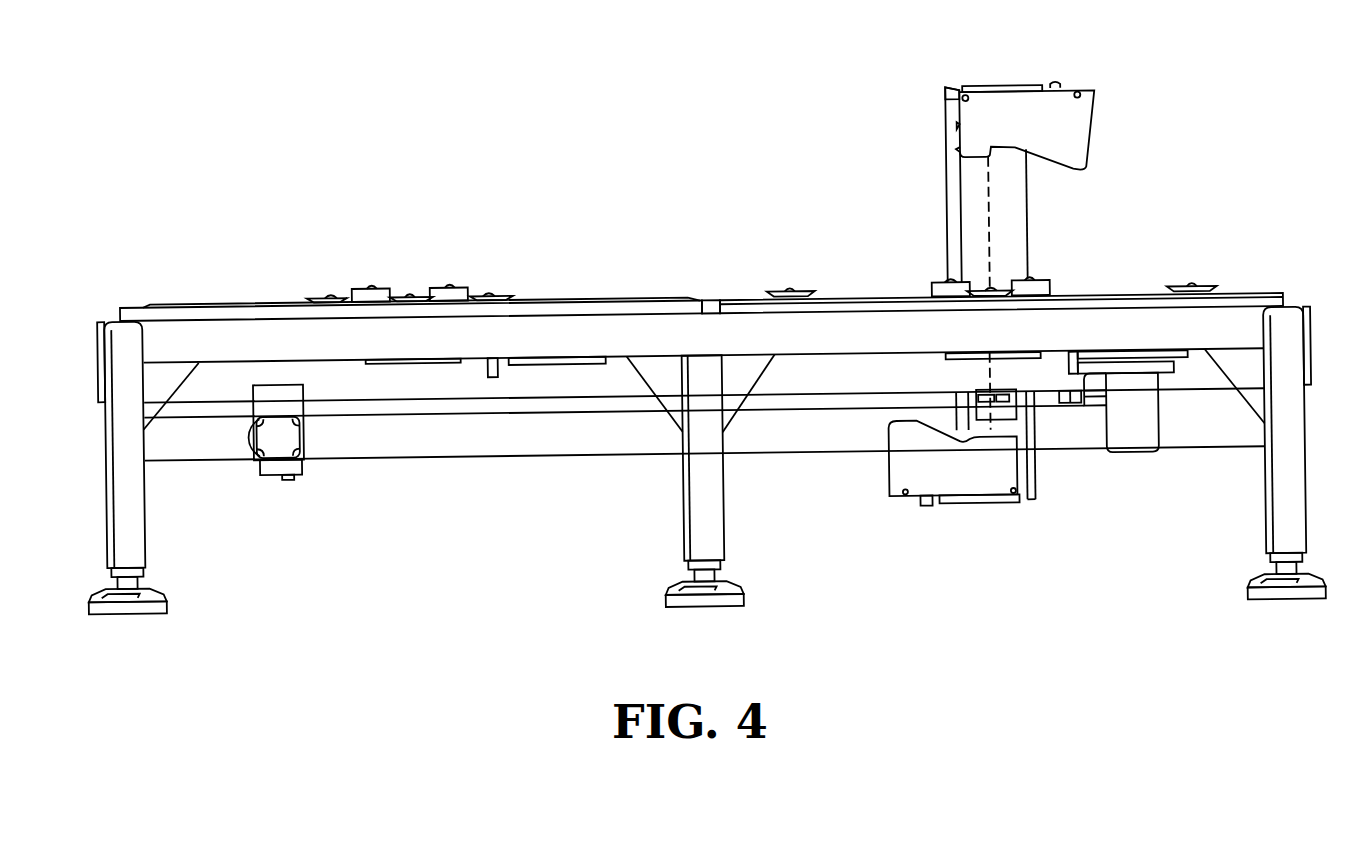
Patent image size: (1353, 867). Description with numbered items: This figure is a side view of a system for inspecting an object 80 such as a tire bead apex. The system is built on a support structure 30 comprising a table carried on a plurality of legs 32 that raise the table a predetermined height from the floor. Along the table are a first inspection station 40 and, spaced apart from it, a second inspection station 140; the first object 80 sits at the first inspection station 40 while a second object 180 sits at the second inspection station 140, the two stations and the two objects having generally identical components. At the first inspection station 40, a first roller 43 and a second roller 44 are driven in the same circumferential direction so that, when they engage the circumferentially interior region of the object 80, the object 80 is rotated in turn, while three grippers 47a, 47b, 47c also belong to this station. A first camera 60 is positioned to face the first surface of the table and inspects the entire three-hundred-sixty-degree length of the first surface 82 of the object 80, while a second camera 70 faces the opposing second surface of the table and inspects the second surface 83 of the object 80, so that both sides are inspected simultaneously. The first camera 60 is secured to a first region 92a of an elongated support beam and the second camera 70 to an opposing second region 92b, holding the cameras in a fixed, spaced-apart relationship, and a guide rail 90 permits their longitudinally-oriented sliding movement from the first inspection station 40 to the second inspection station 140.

The support structure 30 is at (112, 300).
The legs 32 is at (137, 522).
The first inspection station 40 is at (897, 219).
The first roller 43 is at (1048, 288).
The second roller 44 is at (932, 286).
The gripper 47a is at (1200, 287).
The gripper 47b is at (1008, 292).
The gripper 47c is at (795, 290).
The first camera 60 is at (960, 71).
The second camera 70 is at (958, 513).
The object 80 is at (1109, 282).
The first surface 82 is at (724, 302).
The second surface 83 is at (740, 302).
The guide rail 90 is at (958, 187).
The first region of the elongated support beam 92a is at (948, 92).
The second region of the elongated support beam 92b is at (1032, 492).
The second inspection station 140 is at (323, 219).
The second object 180 is at (225, 294).